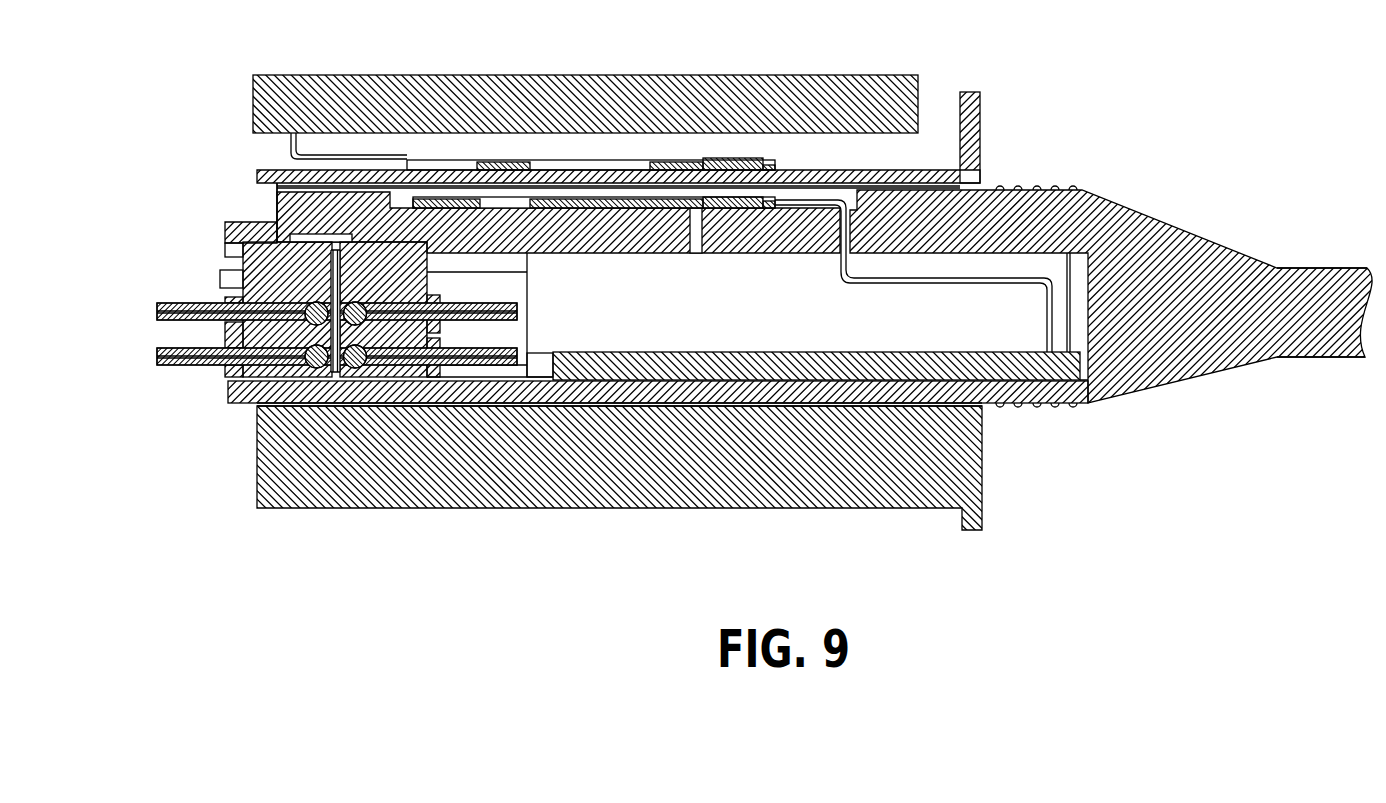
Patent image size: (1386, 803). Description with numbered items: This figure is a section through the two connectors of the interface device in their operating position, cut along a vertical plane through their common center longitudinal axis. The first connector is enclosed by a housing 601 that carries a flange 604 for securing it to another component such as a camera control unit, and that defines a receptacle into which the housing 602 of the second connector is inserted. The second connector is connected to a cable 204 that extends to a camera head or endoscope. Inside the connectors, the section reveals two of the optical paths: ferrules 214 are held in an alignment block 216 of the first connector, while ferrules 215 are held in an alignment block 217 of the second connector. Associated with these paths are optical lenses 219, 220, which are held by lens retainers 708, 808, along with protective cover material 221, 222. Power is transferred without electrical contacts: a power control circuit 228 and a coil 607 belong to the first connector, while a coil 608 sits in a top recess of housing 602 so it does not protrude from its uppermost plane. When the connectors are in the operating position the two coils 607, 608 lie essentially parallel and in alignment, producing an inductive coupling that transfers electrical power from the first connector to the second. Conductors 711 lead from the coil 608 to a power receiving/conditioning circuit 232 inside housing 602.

The cable 204 is at (1304, 268).
The ferrules 214 is at (178, 365).
The ferrules 215 is at (407, 362).
The alignment block 216 is at (265, 281).
The alignment block 217 is at (385, 272).
The optical lens 219 is at (318, 364).
The optical lens 220 is at (340, 373).
The protective cover material 221 is at (333, 268).
The protective cover material 222 is at (338, 282).
The power control circuit 228 is at (552, 113).
The power receiving/conditioning circuit 232 is at (1030, 370).
The housing 601 is at (927, 169).
The housing 602 is at (1040, 189).
The flange 604 is at (982, 140).
The coil 607 is at (720, 160).
The coil 608 is at (748, 203).
The lens retainer 708 is at (353, 362).
The conductors 711 is at (1027, 273).
The lens retainer 808 is at (330, 370).